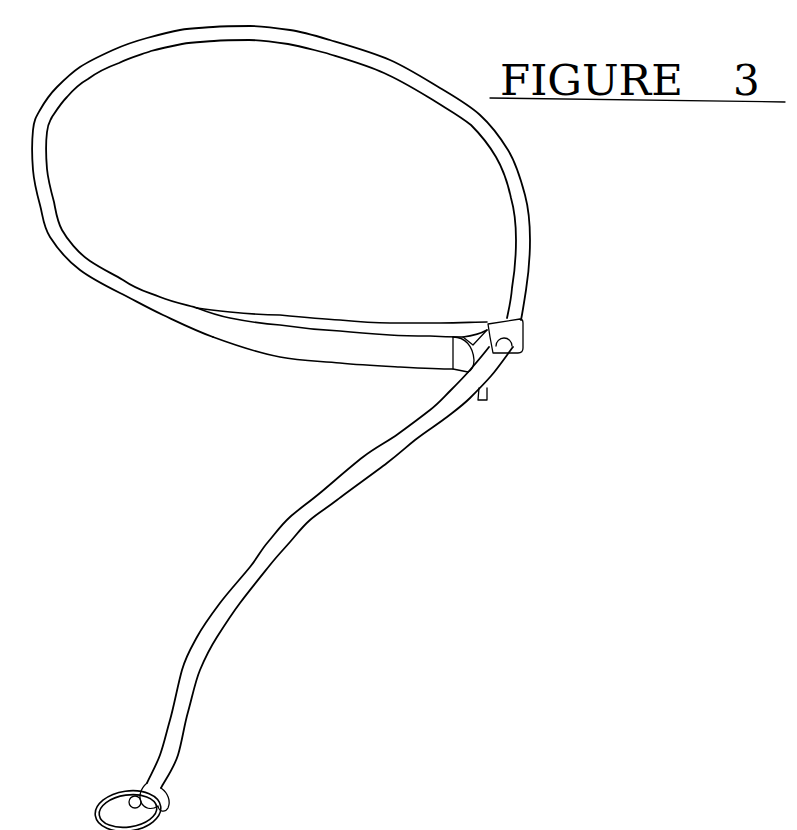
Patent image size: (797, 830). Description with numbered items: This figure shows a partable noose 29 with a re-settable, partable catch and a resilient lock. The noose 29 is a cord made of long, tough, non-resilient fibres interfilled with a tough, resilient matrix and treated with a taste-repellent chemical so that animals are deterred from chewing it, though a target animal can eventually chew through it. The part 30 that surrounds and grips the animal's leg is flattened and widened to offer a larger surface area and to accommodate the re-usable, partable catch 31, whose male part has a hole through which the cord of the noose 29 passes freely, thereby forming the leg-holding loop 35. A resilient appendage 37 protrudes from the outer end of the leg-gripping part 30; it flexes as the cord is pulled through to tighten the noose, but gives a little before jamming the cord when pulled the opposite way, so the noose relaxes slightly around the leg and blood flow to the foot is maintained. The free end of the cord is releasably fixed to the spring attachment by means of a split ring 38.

The partable noose 29 is at (313, 517).
The leg-gripping part 30 is at (323, 344).
The re-usable partable catch 31 is at (524, 323).
The leg-holding loop 35 is at (377, 172).
The resilient appendage 37 is at (455, 369).
The split ring 38 is at (104, 795).